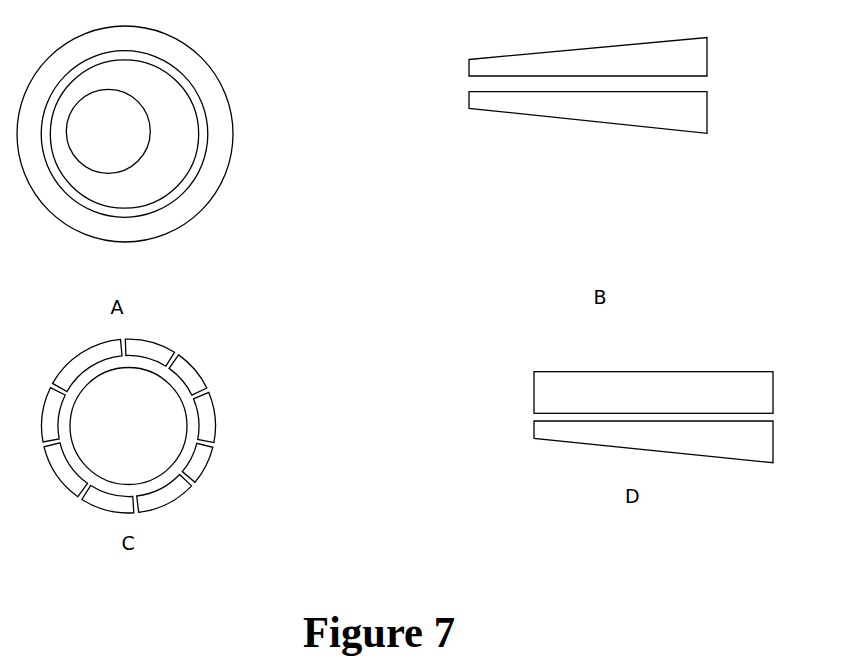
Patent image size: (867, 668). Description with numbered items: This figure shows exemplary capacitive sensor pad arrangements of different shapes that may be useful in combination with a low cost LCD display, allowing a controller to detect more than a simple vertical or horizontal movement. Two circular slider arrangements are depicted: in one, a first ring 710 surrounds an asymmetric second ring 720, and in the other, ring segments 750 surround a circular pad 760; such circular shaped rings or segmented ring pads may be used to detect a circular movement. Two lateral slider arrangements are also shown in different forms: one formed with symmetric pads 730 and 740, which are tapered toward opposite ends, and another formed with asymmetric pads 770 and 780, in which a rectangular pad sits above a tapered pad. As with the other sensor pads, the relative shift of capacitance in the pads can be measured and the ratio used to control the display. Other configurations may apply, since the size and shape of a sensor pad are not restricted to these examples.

The first ring 710 is at (182, 60).
The asymmetric second ring 720 is at (185, 125).
The symmetric pad 730 is at (617, 53).
The symmetric pad 740 is at (677, 92).
The ring segments 750 is at (148, 346).
The circular pad 760 is at (177, 421).
The asymmetric pad 770 is at (653, 388).
The asymmetric pad 780 is at (758, 447).